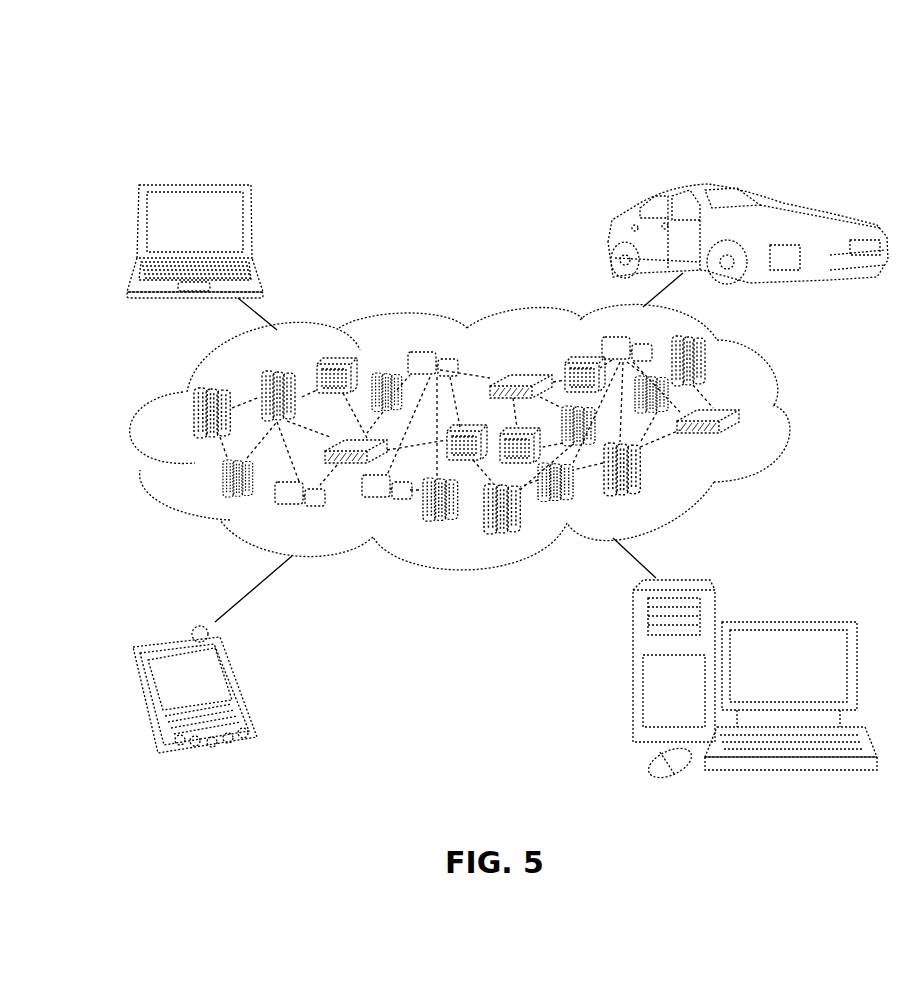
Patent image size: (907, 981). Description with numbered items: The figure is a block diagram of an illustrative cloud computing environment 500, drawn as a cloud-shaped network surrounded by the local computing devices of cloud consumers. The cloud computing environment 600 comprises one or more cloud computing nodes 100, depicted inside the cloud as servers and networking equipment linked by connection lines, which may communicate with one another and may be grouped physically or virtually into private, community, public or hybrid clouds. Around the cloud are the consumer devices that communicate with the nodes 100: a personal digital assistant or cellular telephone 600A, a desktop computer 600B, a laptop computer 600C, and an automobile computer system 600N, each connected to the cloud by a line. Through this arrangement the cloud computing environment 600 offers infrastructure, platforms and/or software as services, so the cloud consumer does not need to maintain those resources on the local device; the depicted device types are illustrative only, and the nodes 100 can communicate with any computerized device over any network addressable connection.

The cloud computing environment 500 is at (128, 72).
The cloud computing environment 600 is at (788, 419).
The cloud computing nodes 100 is at (738, 437).
The personal digital assistant (PDA) or cellular telephone 600A is at (243, 688).
The desktop computer 600B is at (786, 618).
The laptop computer 600C is at (255, 228).
The automobile computer system 600N is at (607, 238).